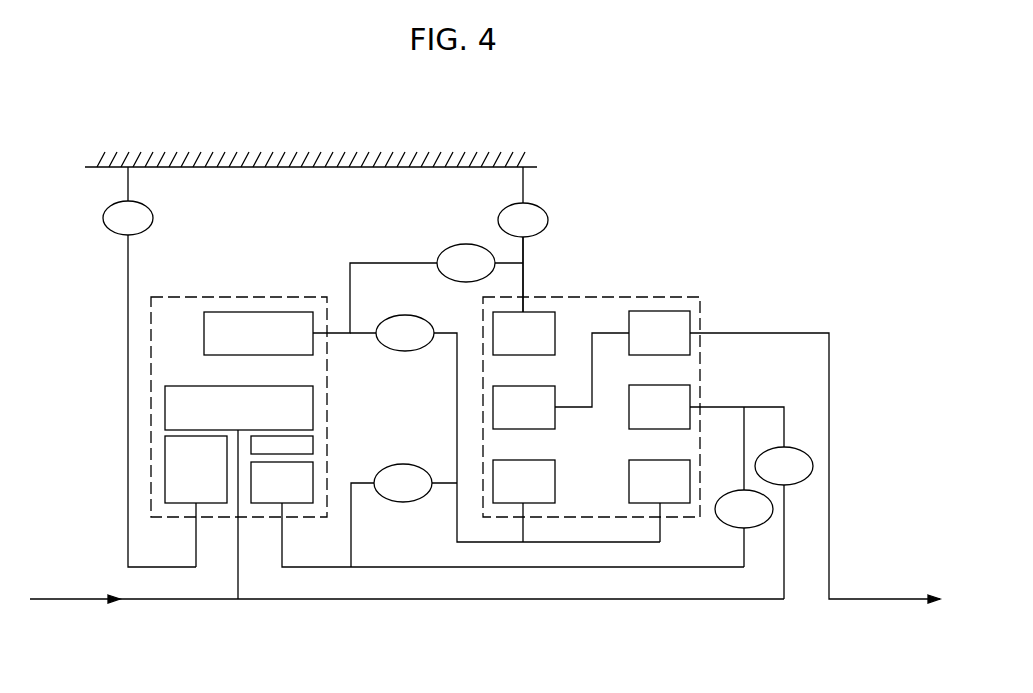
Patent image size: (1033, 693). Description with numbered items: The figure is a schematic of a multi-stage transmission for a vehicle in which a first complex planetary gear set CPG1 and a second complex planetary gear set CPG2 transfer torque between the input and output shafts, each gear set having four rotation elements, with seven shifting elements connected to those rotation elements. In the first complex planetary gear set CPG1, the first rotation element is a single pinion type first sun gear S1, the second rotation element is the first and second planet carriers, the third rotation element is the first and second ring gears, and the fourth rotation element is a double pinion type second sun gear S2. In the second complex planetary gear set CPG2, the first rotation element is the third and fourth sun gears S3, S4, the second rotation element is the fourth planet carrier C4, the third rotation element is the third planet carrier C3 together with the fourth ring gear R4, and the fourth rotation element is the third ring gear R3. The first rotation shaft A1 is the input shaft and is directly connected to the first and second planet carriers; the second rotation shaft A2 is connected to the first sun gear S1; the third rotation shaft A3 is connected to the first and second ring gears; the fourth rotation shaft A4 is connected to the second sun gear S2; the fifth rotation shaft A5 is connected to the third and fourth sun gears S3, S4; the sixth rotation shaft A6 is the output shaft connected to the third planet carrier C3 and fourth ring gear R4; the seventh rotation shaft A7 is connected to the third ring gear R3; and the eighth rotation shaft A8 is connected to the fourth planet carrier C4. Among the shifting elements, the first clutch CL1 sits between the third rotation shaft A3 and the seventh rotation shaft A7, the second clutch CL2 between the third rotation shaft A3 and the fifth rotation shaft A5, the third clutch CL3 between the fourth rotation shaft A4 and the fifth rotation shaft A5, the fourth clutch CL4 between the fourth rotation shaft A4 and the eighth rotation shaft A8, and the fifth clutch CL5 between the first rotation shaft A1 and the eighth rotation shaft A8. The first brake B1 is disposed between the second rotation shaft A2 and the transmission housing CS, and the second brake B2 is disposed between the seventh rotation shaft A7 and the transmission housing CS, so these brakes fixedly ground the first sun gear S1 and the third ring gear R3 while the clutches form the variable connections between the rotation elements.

The transmission housing CS is at (183, 160).
The first rotation shaft A1 is at (302, 599).
The second rotation shaft A2 is at (128, 449).
The third rotation shaft A3 is at (378, 263).
The fourth rotation shaft A4 is at (393, 570).
The fifth rotation shaft A5 is at (617, 543).
The sixth rotation shaft A6 is at (780, 333).
The seventh rotation shaft A7 is at (523, 279).
The eighth rotation shaft A8 is at (766, 407).
The first brake B1 is at (128, 218).
The second brake B2 is at (523, 239).
The first clutch CL1 is at (466, 263).
The second clutch CL2 is at (405, 333).
The third clutch CL3 is at (403, 483).
The fourth clutch CL4 is at (744, 509).
The fifth clutch CL5 is at (784, 466).
The first complex planetary gear set CPG1 is at (239, 367).
The second complex planetary gear set CPG2 is at (591, 474).
The first sun gear S1 is at (196, 469).
The second sun gear S2 is at (282, 482).
The third ring gear R3 is at (524, 333).
The third planet carrier C3 is at (524, 407).
The third sun gear S3 is at (524, 481).
The fourth ring gear R4 is at (659, 333).
The fourth planet carrier C4 is at (659, 407).
The fourth sun gear S4 is at (659, 481).